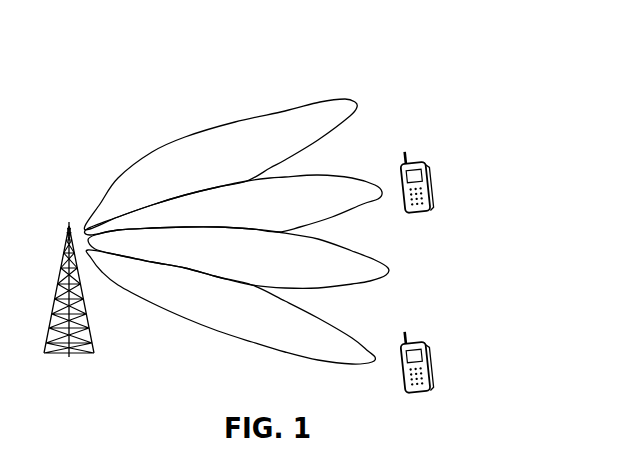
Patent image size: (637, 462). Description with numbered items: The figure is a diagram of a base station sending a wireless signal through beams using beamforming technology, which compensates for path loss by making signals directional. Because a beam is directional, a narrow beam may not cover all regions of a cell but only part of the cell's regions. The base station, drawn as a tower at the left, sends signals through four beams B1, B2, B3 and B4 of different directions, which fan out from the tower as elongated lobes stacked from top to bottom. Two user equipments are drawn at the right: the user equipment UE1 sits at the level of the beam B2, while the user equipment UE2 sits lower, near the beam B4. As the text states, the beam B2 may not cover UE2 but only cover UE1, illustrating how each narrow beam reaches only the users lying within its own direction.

The beam B1 is at (220, 164).
The beam B2 is at (234, 205).
The beam B3 is at (238, 258).
The beam B4 is at (230, 307).
The UE UE1 is at (439, 181).
The UE UE2 is at (439, 361).